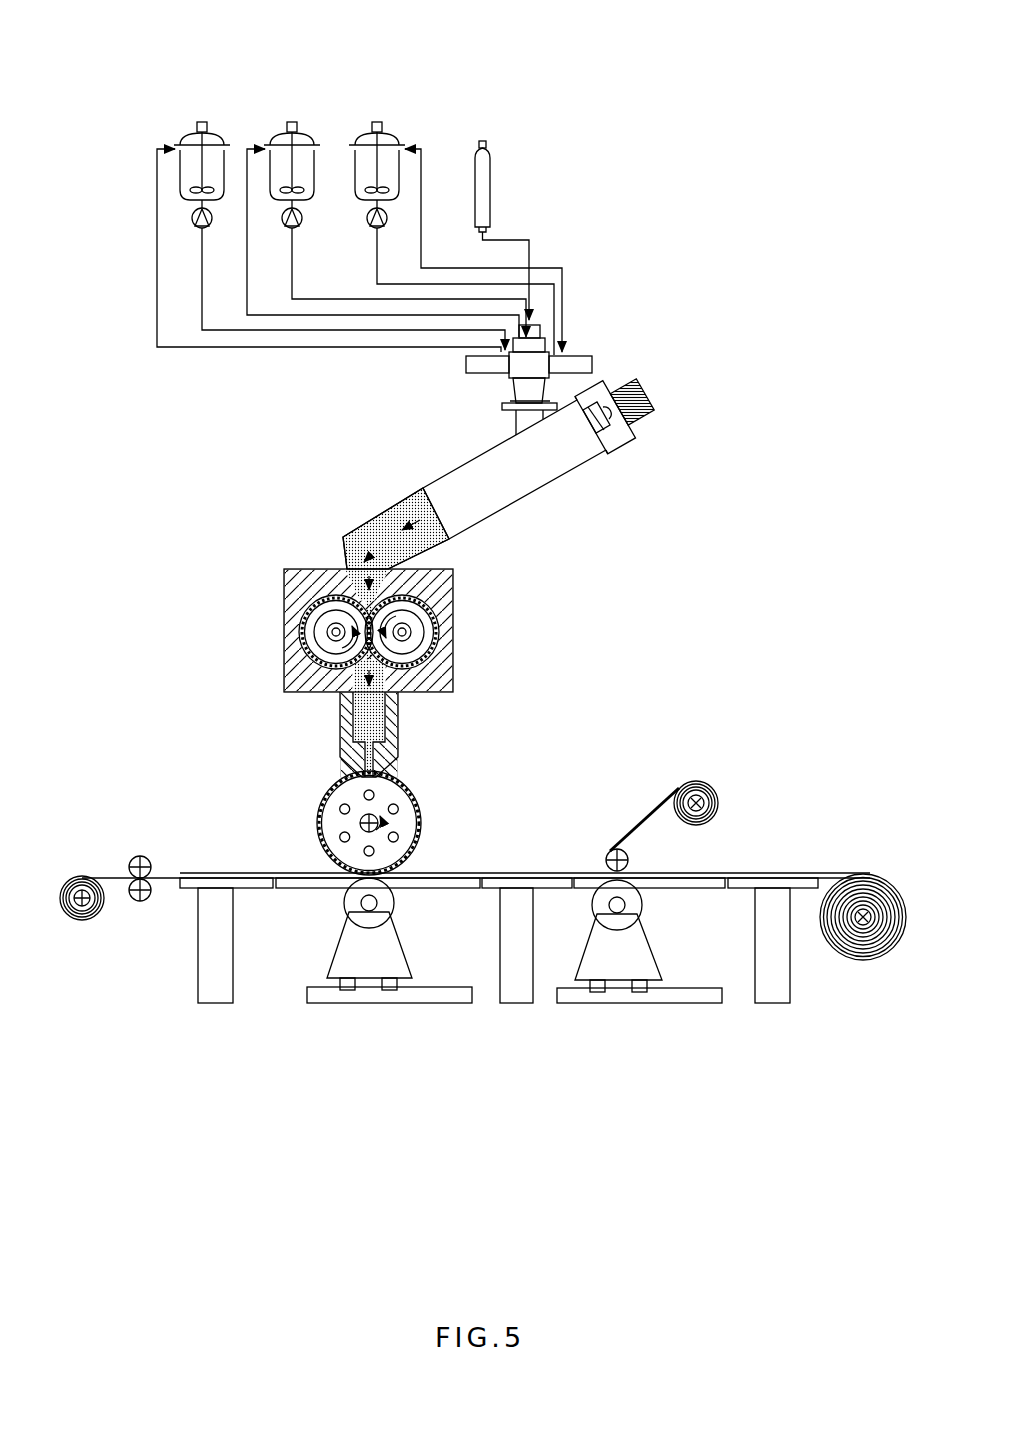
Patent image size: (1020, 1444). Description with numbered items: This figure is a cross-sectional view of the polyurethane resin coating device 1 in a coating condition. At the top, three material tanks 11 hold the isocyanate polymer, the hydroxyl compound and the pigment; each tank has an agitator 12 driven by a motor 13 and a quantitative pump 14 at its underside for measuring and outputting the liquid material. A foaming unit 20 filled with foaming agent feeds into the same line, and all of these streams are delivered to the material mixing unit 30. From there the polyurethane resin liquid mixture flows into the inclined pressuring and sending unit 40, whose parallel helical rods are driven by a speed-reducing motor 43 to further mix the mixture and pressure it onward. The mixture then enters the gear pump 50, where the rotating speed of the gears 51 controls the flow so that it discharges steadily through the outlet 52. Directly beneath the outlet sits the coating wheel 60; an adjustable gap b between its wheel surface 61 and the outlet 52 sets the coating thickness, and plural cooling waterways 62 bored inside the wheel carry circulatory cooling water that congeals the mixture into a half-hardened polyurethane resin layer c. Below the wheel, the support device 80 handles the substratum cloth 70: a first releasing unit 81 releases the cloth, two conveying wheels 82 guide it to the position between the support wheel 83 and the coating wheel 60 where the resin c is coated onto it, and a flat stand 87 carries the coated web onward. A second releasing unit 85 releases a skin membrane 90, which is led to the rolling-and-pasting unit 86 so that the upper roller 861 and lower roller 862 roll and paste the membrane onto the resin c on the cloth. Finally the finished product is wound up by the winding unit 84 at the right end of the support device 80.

The polyurethane resin coating device 1 is at (481, 556).
The material tanks 11 is at (215, 128).
The agitator 12 is at (367, 195).
The motor 13 is at (378, 122).
The quantitative pump 14 is at (383, 225).
The foaming unit 20 is at (500, 180).
The material mixing unit 30 is at (510, 394).
The pressuring and sending unit 40 is at (490, 522).
The speed-reducing motor 43 is at (628, 388).
The gear pump 50 is at (316, 630).
The gears 51 is at (285, 662).
The outlet 52 is at (381, 742).
The coating wheel 60 is at (357, 832).
The wheel surface 61 is at (418, 784).
The cooling waterways 62 is at (344, 840).
The substratum cloth 70 is at (112, 875).
The support device 80 is at (481, 914).
The first releasing unit 81 is at (73, 917).
The conveying wheels 82 is at (135, 905).
The support wheel 83 is at (394, 903).
The winding unit 84 is at (865, 925).
The second releasing unit 85 is at (719, 795).
The rolling-and-pasting unit 86 is at (632, 923).
The upper roller 861 is at (628, 862).
The lower roller 862 is at (642, 906).
The flat stand 87 is at (510, 873).
The skin membrane 90 is at (648, 800).
The gap b is at (414, 781).
The half-hardened polyurethane resin layer c is at (322, 790).